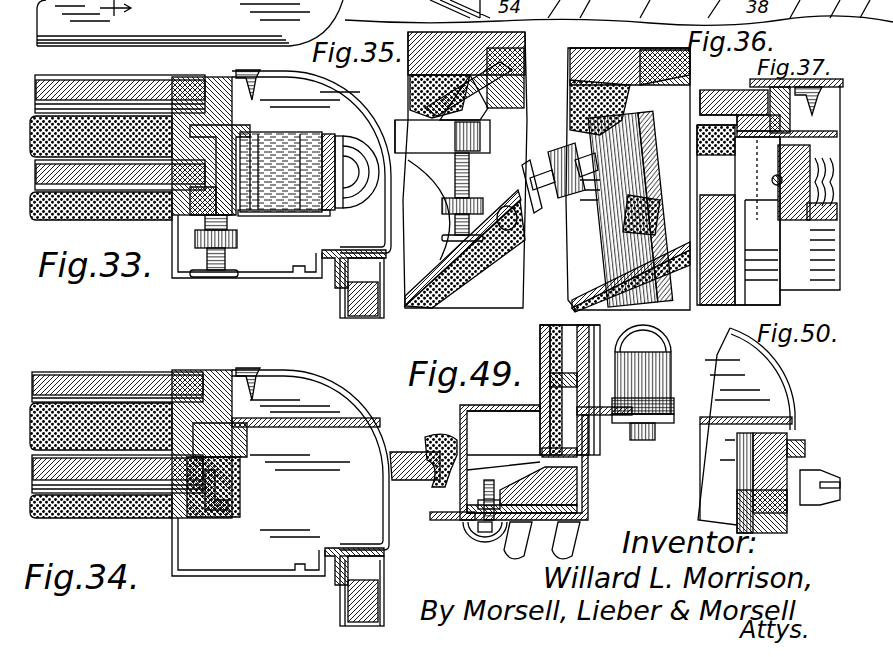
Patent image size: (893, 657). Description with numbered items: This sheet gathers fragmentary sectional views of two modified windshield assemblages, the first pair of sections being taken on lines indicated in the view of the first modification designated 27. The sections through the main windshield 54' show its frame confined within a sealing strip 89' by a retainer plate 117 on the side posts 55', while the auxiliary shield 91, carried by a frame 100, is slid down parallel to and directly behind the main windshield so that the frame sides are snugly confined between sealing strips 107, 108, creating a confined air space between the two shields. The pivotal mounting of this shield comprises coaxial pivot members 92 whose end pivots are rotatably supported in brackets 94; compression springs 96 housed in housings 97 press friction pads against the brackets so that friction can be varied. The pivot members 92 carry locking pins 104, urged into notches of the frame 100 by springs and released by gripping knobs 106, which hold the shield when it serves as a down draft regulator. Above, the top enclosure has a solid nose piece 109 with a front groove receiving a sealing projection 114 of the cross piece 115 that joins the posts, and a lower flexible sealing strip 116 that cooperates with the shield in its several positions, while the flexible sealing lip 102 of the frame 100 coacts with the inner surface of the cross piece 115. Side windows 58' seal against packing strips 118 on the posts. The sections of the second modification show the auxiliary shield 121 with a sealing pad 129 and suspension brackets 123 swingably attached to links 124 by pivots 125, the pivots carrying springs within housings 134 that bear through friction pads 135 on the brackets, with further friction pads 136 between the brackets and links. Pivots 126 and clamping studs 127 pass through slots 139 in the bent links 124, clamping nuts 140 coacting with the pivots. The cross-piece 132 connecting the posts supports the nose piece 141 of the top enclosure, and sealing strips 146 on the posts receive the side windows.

In FIG. 33, the casing 27 is at (190, 23).
In FIG. 33, the main windshield 54' is at (120, 81).
In FIG. 34, the main windshield 54' is at (117, 372).
In FIG. 33, the sealing strip 107 is at (101, 136).
In FIG. 34, the sealing strip 107 is at (101, 427).
In FIG. 35, the sealing strip 107 is at (512, 260).
In FIG. 36, the sealing strip 107 is at (631, 252).
In FIG. 33, the auxiliary shield 91 is at (78, 180).
In FIG. 34, the auxiliary shield 91 is at (126, 480).
In FIG. 37, the auxiliary shield 91 is at (712, 275).
In FIG. 33, the sealing strip 108 is at (100, 213).
In FIG. 34, the sealing strip 108 is at (78, 512).
In FIG. 35, the sealing strip 108 is at (511, 287).
In FIG. 36, the sealing strip 108 is at (642, 288).
In FIG. 33, the retainer plate 117 is at (192, 76).
In FIG. 34, the retainer plate 117 is at (192, 370).
In FIG. 33, the sealing strip 89' is at (234, 74).
In FIG. 34, the sealing strip 89' is at (234, 370).
In FIG. 33, the side posts 55' is at (281, 174).
In FIG. 34, the side posts 55' is at (280, 465).
In FIG. 33, the pivot members 92 is at (246, 143).
In FIG. 35, the pivot members 92 is at (442, 136).
In FIG. 36, the pivot members 92 is at (597, 193).
In FIG. 37, the pivot members 92 is at (786, 214).
In FIG. 33, the locking pins 104 is at (196, 206).
In FIG. 35, the locking pins 104 is at (466, 170).
In FIG. 37, the locking pins 104 is at (772, 181).
In FIG. 33, the housings 97 is at (309, 172).
In FIG. 37, the housings 97 is at (782, 226).
In FIG. 33, the brackets 94 is at (326, 218).
In FIG. 33, the gripping knobs 106 is at (202, 280).
In FIG. 35, the gripping knobs 106 is at (456, 240).
In FIG. 33, the packing strips 118 is at (336, 280).
In FIG. 34, the packing strips 118 is at (370, 550).
In FIG. 33, the side windows 58' is at (341, 296).
In FIG. 34, the side windows 58' is at (335, 591).
In FIG. 34, the frame 100 is at (172, 486).
In FIG. 35, the frame 100 is at (384, 124).
In FIG. 36, the frame 100 is at (690, 220).
In FIG. 37, the frame 100 is at (776, 296).
In FIG. 35, the nose piece 109 is at (456, 31).
In FIG. 36, the nose piece 109 is at (630, 41).
In FIG. 35, the sealing projection 114 is at (515, 48).
In FIG. 36, the sealing projection 114 is at (684, 70).
In FIG. 35, the cross piece 115 is at (514, 86).
In FIG. 35, the flexible sealing strip 116 is at (515, 103).
In FIG. 35, the flexible sealing lip 102 is at (515, 126).
In FIG. 37, the flexible sealing lip 102 is at (717, 215).
In FIG. 37, the compression springs 96 is at (816, 219).
In FIG. 49, the auxiliary shield 121 is at (570, 326).
In FIG. 49, the sealing pad 129 is at (560, 382).
In FIG. 49, the suspension brackets 123 is at (590, 411).
In FIG. 49, the housings 134 is at (665, 362).
In FIG. 49, the friction pads 135 is at (643, 397).
In FIG. 49, the pivots 125 is at (650, 438).
In FIG. 49, the friction pads 136 is at (630, 424).
In FIG. 49, the cross-piece 132 is at (576, 478).
In FIG. 50, the cross-piece 132 is at (765, 462).
In FIG. 49, the links 124 is at (578, 495).
In FIG. 50, the links 124 is at (798, 446).
In FIG. 49, the pivots 126 is at (488, 498).
In FIG. 49, the slots 139 is at (466, 516).
In FIG. 50, the slots 139 is at (810, 506).
In FIG. 49, the clamping nuts 140 is at (478, 538).
In FIG. 49, the clamping studs 127 is at (566, 546).
In FIG. 50, the clamping studs 127 is at (756, 506).
In FIG. 49, the sealing strips 146 is at (440, 434).
In FIG. 50, the nose piece 141 is at (734, 426).